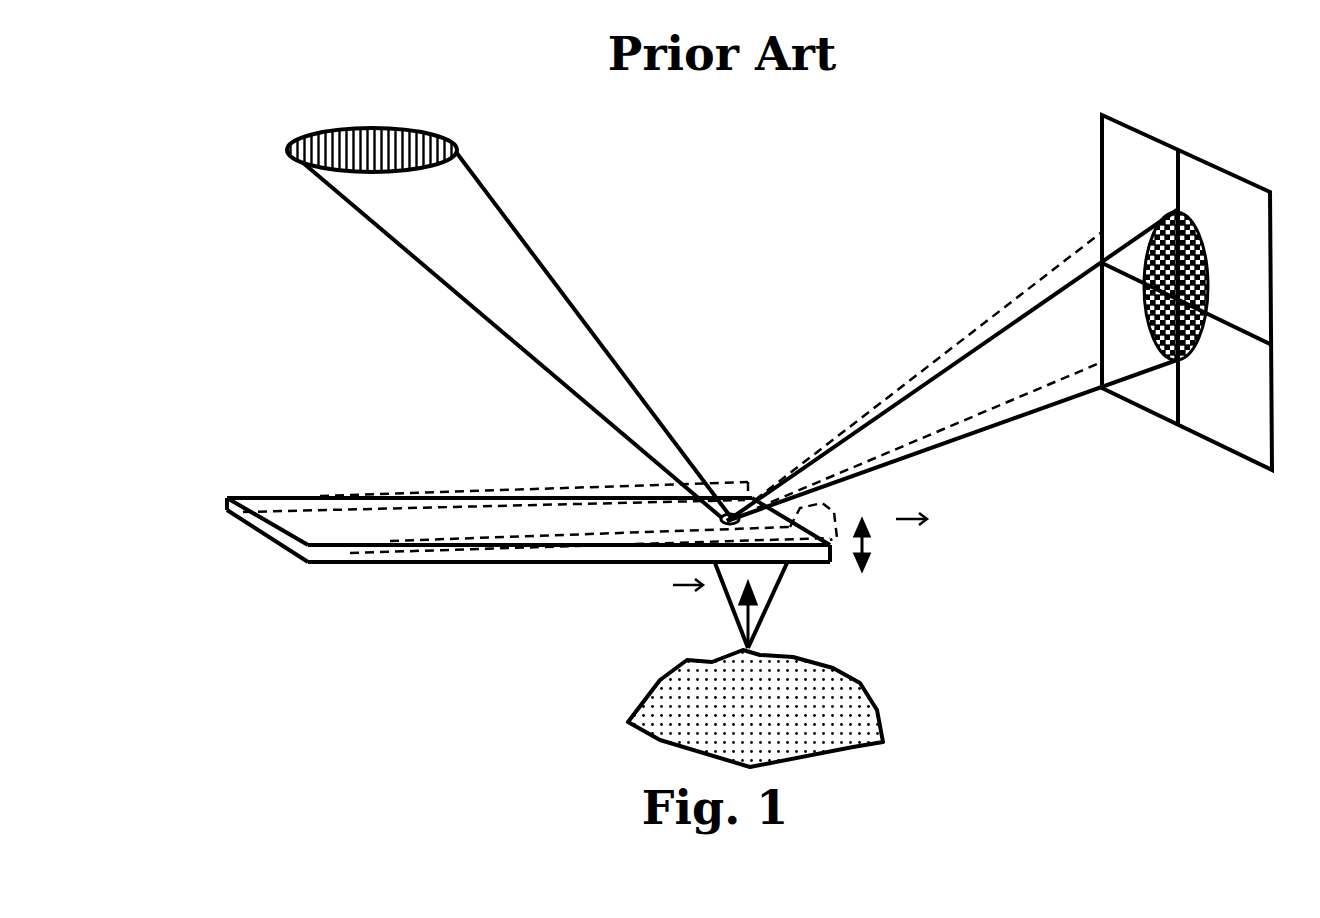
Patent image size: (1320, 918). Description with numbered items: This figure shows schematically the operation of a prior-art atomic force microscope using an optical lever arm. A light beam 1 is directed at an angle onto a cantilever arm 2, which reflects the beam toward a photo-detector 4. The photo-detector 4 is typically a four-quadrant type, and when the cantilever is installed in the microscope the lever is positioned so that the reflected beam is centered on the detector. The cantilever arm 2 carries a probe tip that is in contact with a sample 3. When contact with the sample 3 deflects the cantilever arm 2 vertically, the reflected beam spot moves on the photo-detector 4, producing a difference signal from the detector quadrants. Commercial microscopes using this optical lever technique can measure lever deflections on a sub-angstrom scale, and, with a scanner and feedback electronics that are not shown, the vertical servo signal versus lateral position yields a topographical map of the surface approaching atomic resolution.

The light beam 1 is at (270, 182).
The cantilever arm 2 is at (253, 538).
The sample 3 is at (910, 705).
The photo-detector 4 is at (1080, 190).